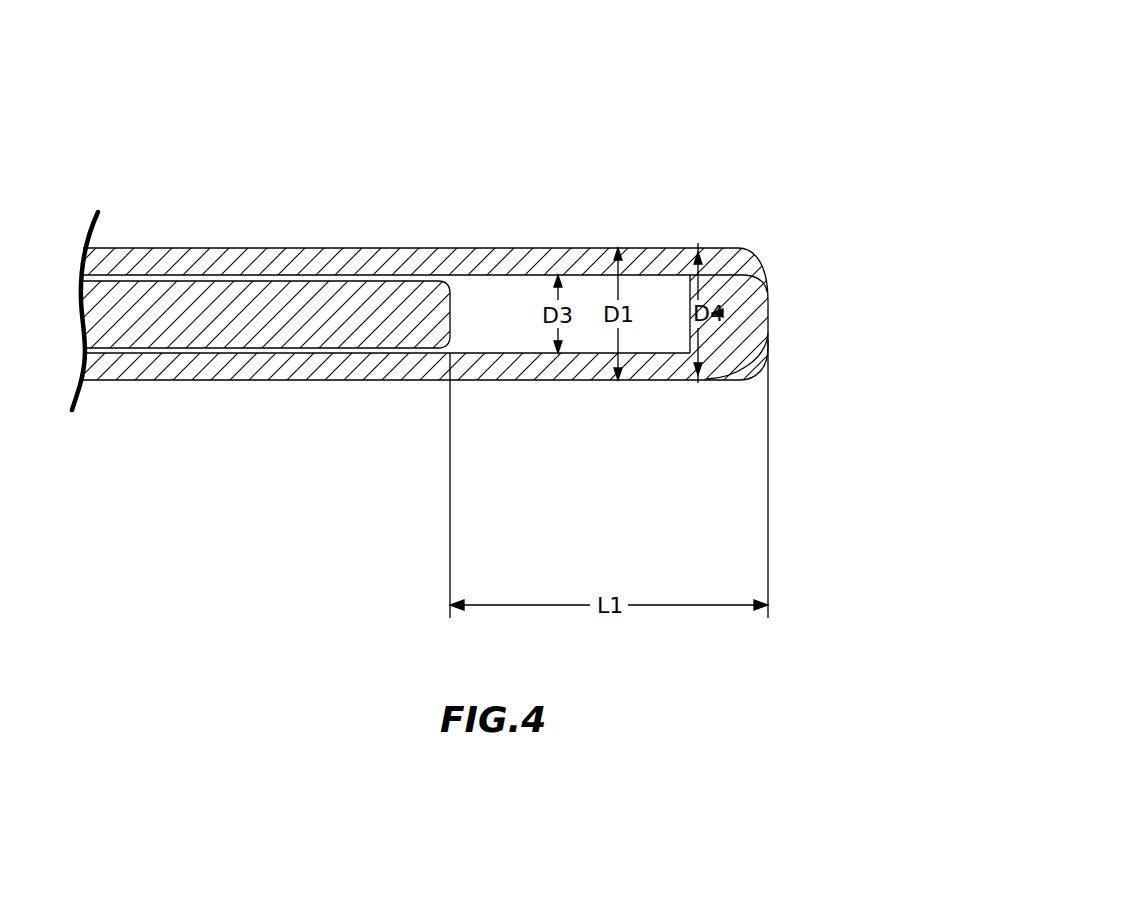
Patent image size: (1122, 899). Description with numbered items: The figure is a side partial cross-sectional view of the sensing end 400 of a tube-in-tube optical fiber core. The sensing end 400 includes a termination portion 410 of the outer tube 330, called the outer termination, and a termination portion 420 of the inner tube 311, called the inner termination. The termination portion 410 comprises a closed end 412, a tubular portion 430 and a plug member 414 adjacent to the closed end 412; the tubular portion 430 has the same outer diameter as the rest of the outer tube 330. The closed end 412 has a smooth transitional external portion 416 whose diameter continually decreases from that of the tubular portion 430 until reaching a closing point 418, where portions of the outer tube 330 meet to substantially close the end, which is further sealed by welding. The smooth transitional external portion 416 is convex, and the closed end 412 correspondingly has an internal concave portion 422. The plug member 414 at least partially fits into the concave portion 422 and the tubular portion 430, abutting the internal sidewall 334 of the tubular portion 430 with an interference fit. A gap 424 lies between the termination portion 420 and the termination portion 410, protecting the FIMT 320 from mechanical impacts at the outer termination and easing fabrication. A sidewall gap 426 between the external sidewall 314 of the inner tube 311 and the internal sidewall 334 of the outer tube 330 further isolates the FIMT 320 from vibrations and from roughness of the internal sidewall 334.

The inner tube 311 is at (272, 330).
The external sidewall of the inner tube 314 is at (322, 256).
The FIMT 320 is at (250, 312).
The outer tube 330 is at (401, 258).
The internal sidewall of the outer tube 334 is at (467, 294).
The sensing end 400 is at (732, 52).
The termination portion of the outer tube 410 is at (707, 202).
The closed end 412 is at (767, 274).
The plug member 414 is at (689, 334).
The smooth transitional external portion 416 is at (742, 250).
The closing point 418 is at (770, 316).
The termination portion of the inner tube 420 is at (458, 316).
The internal concave portion 422 is at (739, 297).
The gap 424 is at (597, 335).
The sidewall gap 426 is at (150, 275).
The tubular portion 430 is at (735, 352).